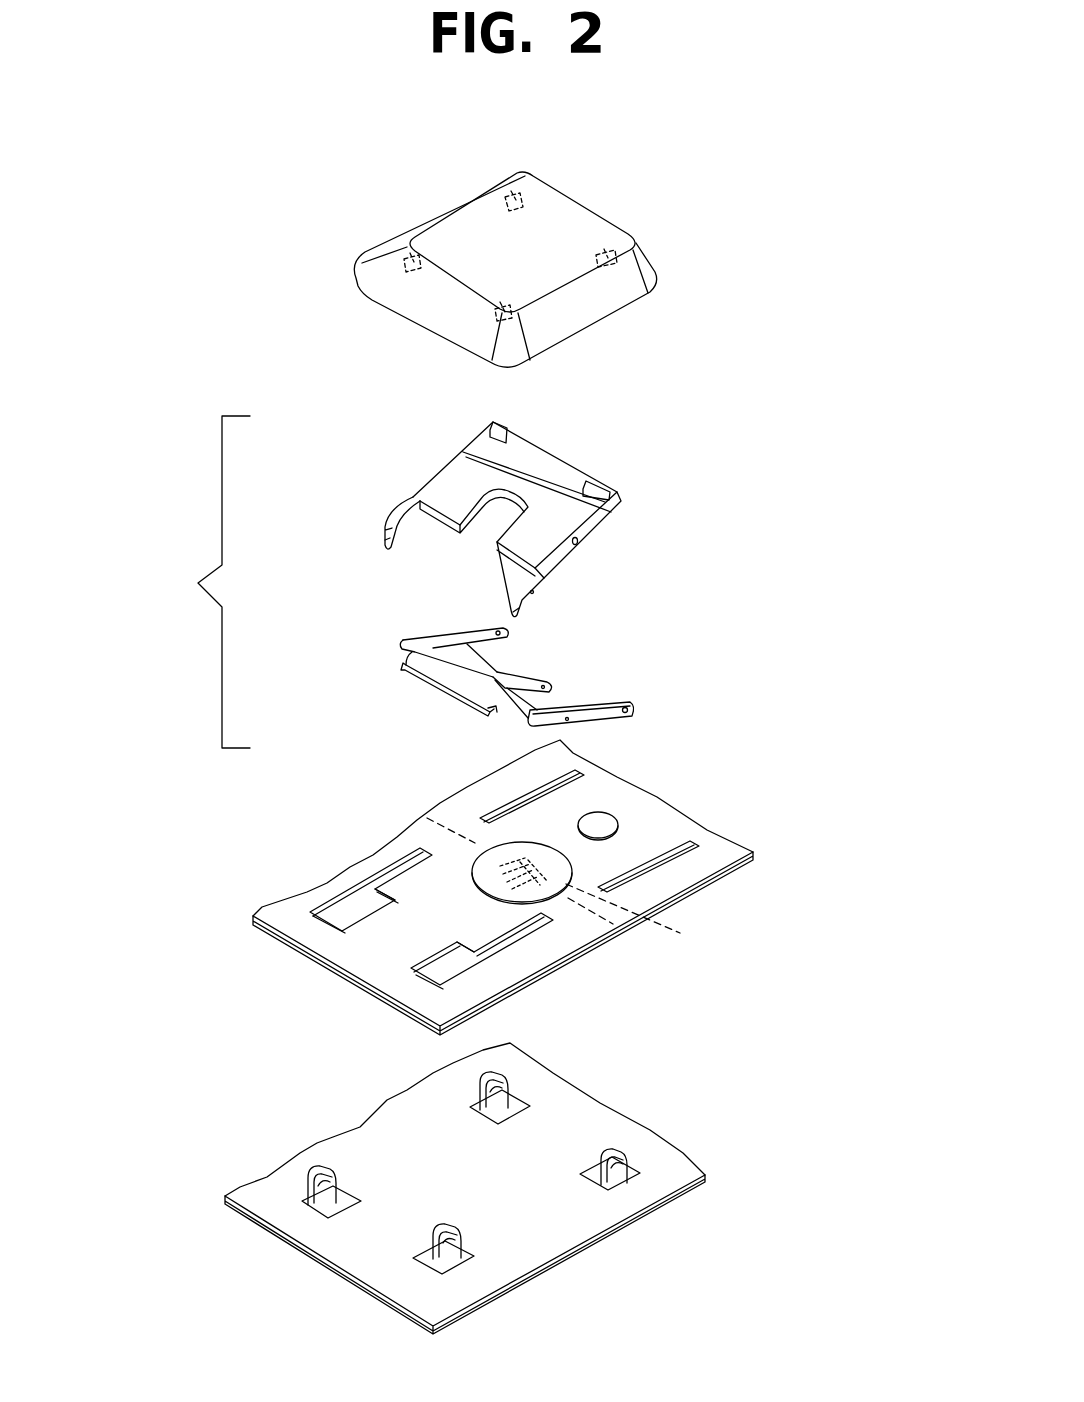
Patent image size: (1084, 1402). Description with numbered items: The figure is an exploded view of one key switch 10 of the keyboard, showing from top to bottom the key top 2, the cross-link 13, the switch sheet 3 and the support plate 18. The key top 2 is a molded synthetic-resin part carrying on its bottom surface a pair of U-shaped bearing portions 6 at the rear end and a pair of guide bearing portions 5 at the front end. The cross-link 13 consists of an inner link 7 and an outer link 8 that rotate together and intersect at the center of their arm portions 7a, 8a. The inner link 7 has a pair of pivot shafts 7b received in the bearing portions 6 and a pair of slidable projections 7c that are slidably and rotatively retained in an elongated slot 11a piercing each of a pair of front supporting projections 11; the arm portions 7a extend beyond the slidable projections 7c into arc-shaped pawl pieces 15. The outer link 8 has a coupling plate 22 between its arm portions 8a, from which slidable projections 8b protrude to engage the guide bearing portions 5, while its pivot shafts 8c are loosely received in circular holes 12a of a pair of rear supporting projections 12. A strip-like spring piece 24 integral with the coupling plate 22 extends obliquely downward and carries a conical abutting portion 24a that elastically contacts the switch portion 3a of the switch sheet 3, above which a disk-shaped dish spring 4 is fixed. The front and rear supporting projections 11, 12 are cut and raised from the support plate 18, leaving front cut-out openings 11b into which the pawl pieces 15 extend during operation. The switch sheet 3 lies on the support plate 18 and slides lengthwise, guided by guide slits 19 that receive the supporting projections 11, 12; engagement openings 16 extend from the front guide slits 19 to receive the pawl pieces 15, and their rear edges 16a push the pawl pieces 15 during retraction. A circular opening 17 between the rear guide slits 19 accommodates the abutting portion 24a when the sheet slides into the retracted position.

The key top 2 is at (556, 253).
The switch sheet 3 is at (534, 886).
The switch portion 3a is at (569, 895).
The dish spring 4 is at (485, 860).
The guide bearing portions 5 is at (503, 320).
The bearing portions 6 is at (618, 247).
The inner link 7 is at (510, 497).
The arm portions 7a is at (560, 556).
The pivot shafts 7b is at (600, 480).
The slidable projections 7c is at (530, 588).
The outer link 8 is at (553, 672).
The arm portions 8a is at (600, 713).
The slidable projections 8b is at (490, 715).
The pivot shafts 8c is at (633, 704).
The key switch 10 is at (767, 342).
The front supporting projections 11 is at (310, 1206).
The elongated slot 11a is at (468, 1262).
The front cut-out openings 11b is at (343, 1203).
The rear supporting projections 12 is at (614, 1180).
The circular holes 12a is at (502, 1086).
The cross-link 13 is at (206, 582).
The pawl pieces 15 is at (513, 605).
The engagement openings 16 is at (447, 960).
The rear edge 16a is at (382, 895).
The circular opening 17 is at (600, 825).
The support plate 18 is at (512, 1185).
The guide slits 19 is at (617, 880).
The coupling plate 22 is at (463, 680).
The spring piece 24 is at (545, 675).
The abutting portion 24a is at (557, 684).